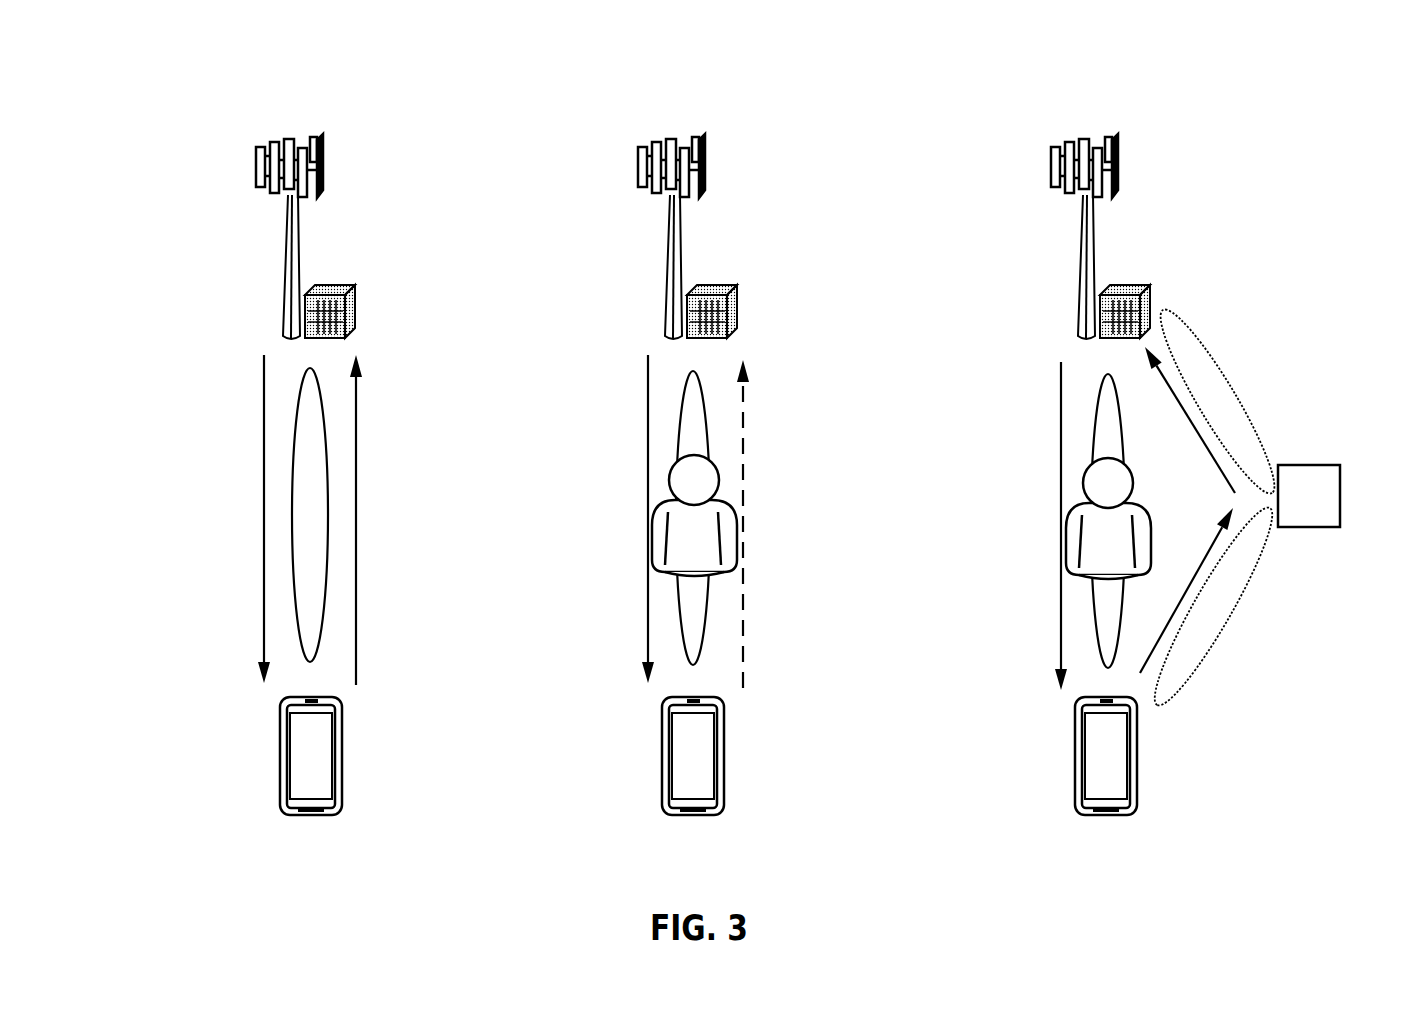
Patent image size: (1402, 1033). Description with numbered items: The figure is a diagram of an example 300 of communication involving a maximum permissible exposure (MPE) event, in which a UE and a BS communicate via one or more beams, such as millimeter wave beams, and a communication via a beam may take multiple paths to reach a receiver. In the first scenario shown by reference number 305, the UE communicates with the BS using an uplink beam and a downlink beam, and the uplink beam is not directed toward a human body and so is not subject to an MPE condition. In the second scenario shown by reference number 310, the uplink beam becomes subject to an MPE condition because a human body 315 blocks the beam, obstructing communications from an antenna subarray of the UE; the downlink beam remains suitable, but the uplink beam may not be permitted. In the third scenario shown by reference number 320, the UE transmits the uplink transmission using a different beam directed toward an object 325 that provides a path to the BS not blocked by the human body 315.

The example of communication involving a maximum permissible exposure event 300 is at (209, 54).
The uplink and downlink beam communication 305 is at (402, 112).
The uplink beam subject to MPE condition 310 is at (705, 472).
The human body 315 is at (656, 507).
The uplink transmission using a different beam 320 is at (1121, 472).
The object 325 is at (1325, 465).